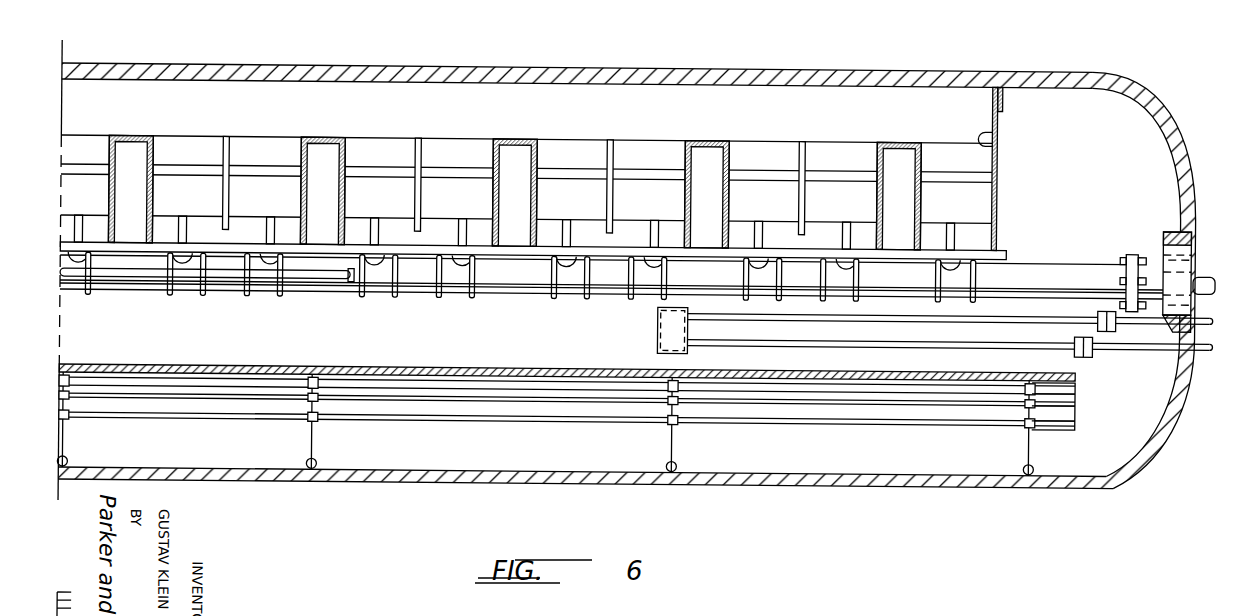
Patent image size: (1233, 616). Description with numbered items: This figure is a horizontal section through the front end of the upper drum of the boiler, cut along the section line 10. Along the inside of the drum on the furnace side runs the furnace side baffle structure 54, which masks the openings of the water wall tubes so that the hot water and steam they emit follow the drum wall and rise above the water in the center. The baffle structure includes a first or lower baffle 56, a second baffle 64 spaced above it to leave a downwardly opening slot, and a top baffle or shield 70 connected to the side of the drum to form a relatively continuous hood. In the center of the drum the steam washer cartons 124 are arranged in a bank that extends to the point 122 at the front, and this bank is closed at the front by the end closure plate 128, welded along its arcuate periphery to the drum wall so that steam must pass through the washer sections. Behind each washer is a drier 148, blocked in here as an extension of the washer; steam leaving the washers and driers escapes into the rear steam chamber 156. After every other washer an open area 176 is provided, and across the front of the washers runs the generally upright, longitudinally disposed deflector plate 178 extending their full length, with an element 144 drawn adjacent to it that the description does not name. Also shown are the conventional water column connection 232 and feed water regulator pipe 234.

The section line 10 is at (487, 31).
The furnace side baffle structure 54 is at (585, 408).
The first or lower baffle 56 is at (180, 417).
The second baffle 64 is at (282, 396).
The top baffle or shield 70 is at (398, 362).
The point 122 is at (1000, 141).
The carton 124 is at (385, 189).
The end closure plate 128 is at (998, 133).
The rod 144 is at (1046, 267).
The drier 148 is at (365, 144).
The rear steam chamber 156 is at (613, 88).
The open area 176 is at (133, 232).
The plate or deflector 178 is at (1005, 248).
The water column connection 232 is at (975, 336).
The feed water regulator pipe 234 is at (985, 309).